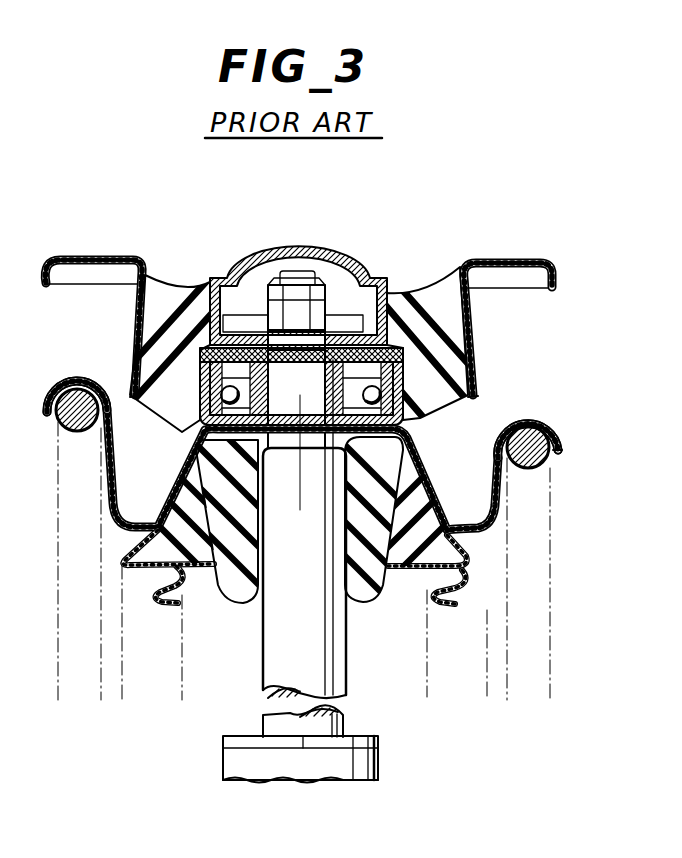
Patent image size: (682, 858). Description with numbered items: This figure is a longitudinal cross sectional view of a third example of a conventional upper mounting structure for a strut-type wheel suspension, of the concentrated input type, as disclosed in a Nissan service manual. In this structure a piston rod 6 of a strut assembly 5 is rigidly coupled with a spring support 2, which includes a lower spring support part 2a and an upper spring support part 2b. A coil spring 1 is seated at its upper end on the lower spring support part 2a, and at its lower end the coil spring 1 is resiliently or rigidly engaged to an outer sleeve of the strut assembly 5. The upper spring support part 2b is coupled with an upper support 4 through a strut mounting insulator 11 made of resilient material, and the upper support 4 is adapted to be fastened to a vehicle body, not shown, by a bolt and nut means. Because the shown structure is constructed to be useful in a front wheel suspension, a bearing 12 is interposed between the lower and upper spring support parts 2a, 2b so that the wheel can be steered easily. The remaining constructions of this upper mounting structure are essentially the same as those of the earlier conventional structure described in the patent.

The coil spring 1 is at (533, 470).
The spring support 2 is at (448, 437).
The lower spring support part 2a is at (557, 429).
The upper spring support part 2b is at (453, 430).
The upper support 4 is at (547, 262).
The strut assembly 5 is at (390, 760).
The piston rod 6 is at (346, 643).
The strut mounting insulator 11 is at (419, 298).
The bearing 12 is at (196, 288).